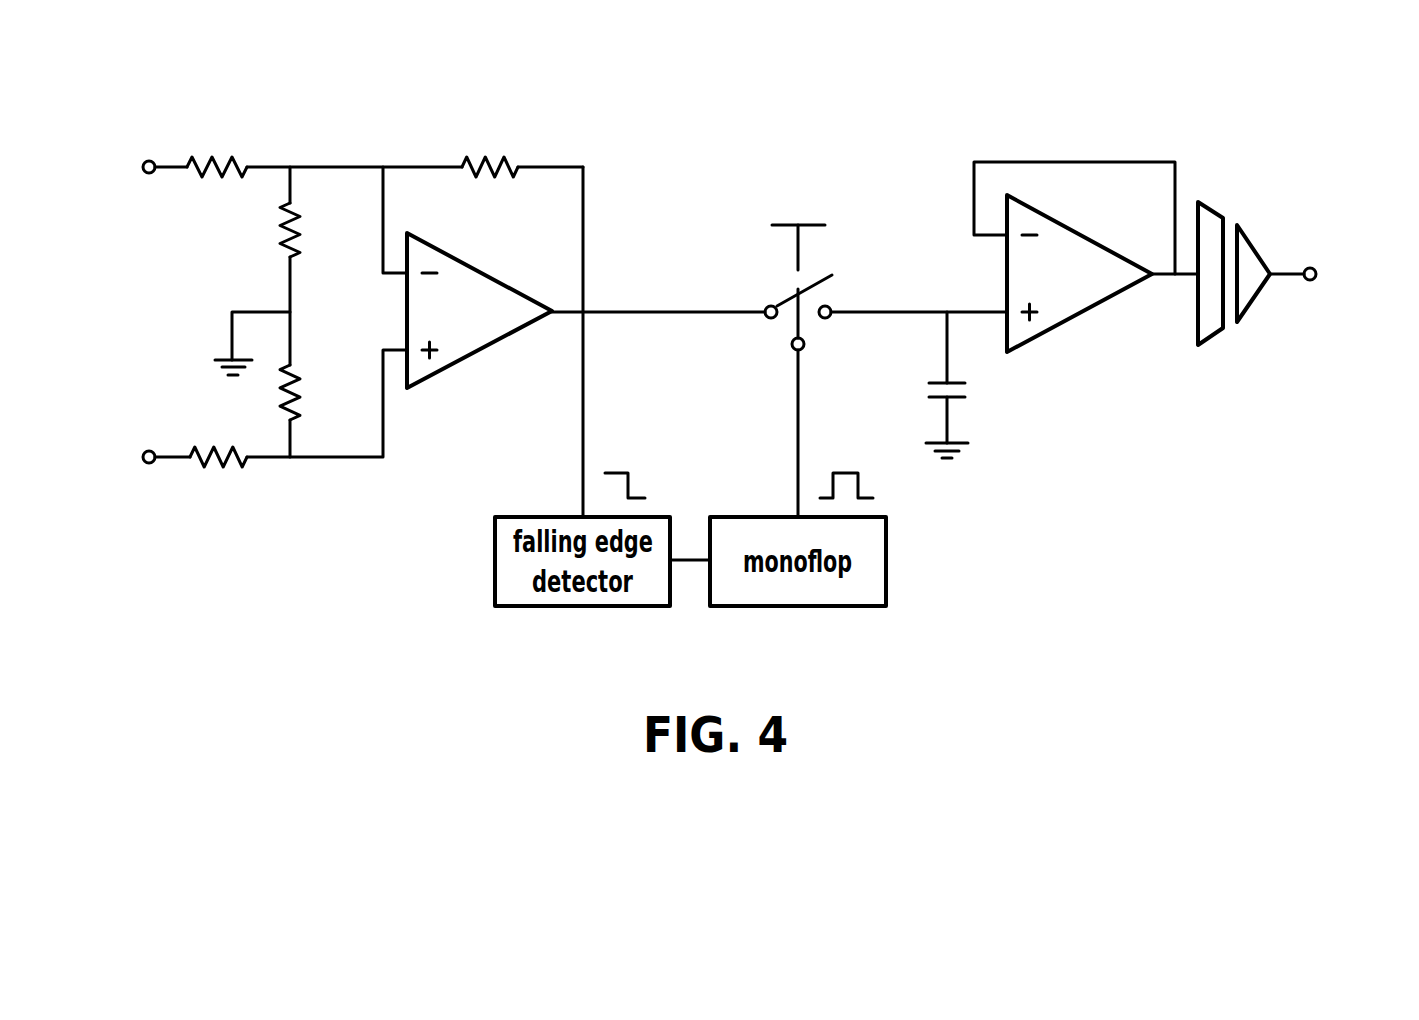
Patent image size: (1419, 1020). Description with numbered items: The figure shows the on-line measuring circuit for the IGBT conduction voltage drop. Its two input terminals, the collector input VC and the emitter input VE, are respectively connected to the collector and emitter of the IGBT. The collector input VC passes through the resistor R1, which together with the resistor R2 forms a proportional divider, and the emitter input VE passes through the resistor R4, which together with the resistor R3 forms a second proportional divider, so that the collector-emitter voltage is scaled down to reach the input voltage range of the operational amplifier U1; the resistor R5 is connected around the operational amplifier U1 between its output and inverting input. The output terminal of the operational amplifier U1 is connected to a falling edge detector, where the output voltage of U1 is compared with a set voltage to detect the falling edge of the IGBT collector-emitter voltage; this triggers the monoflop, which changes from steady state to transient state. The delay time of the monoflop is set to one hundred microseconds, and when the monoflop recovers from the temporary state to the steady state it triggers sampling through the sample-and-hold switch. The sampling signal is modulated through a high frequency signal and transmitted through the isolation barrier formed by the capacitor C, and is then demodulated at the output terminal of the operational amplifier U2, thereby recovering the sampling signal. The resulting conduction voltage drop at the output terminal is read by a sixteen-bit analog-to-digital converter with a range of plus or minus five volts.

The resistor R1 is at (217, 145).
The resistor R2 is at (309, 230).
The resistor R3 is at (309, 392).
The resistor R4 is at (218, 435).
The resistor R5 is at (490, 146).
The operational amplifier U1 is at (479, 319).
The operational amplifier U2 is at (1074, 265).
The capacitor C is at (958, 385).
The collector input terminal VC is at (146, 165).
The emitter input terminal VE is at (148, 456).